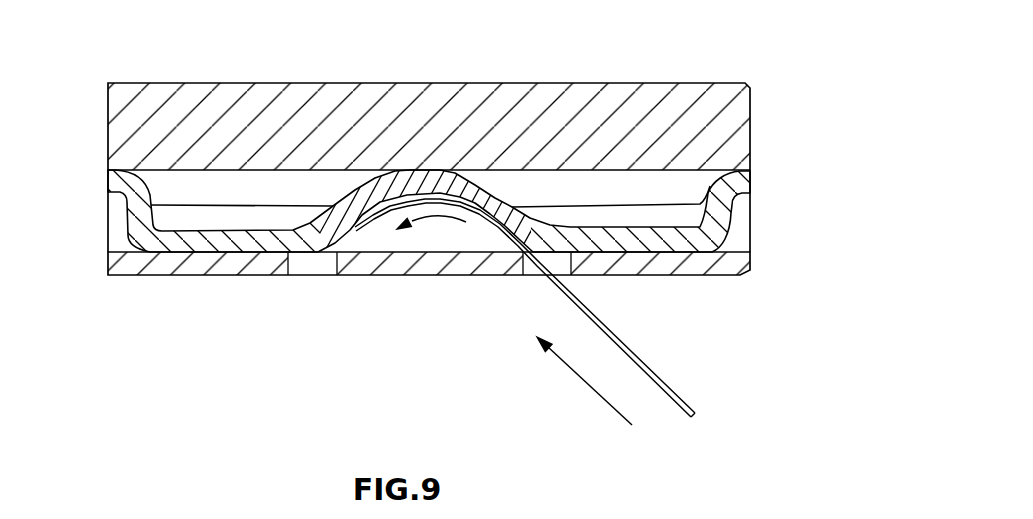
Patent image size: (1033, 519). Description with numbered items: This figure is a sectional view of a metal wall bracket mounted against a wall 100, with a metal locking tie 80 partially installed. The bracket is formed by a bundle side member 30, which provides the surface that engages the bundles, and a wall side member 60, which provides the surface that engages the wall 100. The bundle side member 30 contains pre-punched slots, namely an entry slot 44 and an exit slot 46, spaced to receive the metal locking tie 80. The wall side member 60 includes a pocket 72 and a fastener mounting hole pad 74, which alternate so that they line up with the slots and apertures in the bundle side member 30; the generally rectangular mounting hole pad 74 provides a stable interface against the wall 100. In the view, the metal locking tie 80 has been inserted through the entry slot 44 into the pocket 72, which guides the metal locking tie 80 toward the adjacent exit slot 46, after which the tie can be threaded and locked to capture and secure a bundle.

The wall 100 is at (652, 95).
The bundle side member 30 is at (429, 306).
The wall side member 60 is at (434, 210).
The fastener mounting hole pad 74 is at (735, 180).
The exit slot 46 is at (305, 262).
The entry slot 44 is at (528, 262).
The pocket 72 is at (430, 237).
The metal locking tie 80 is at (657, 370).